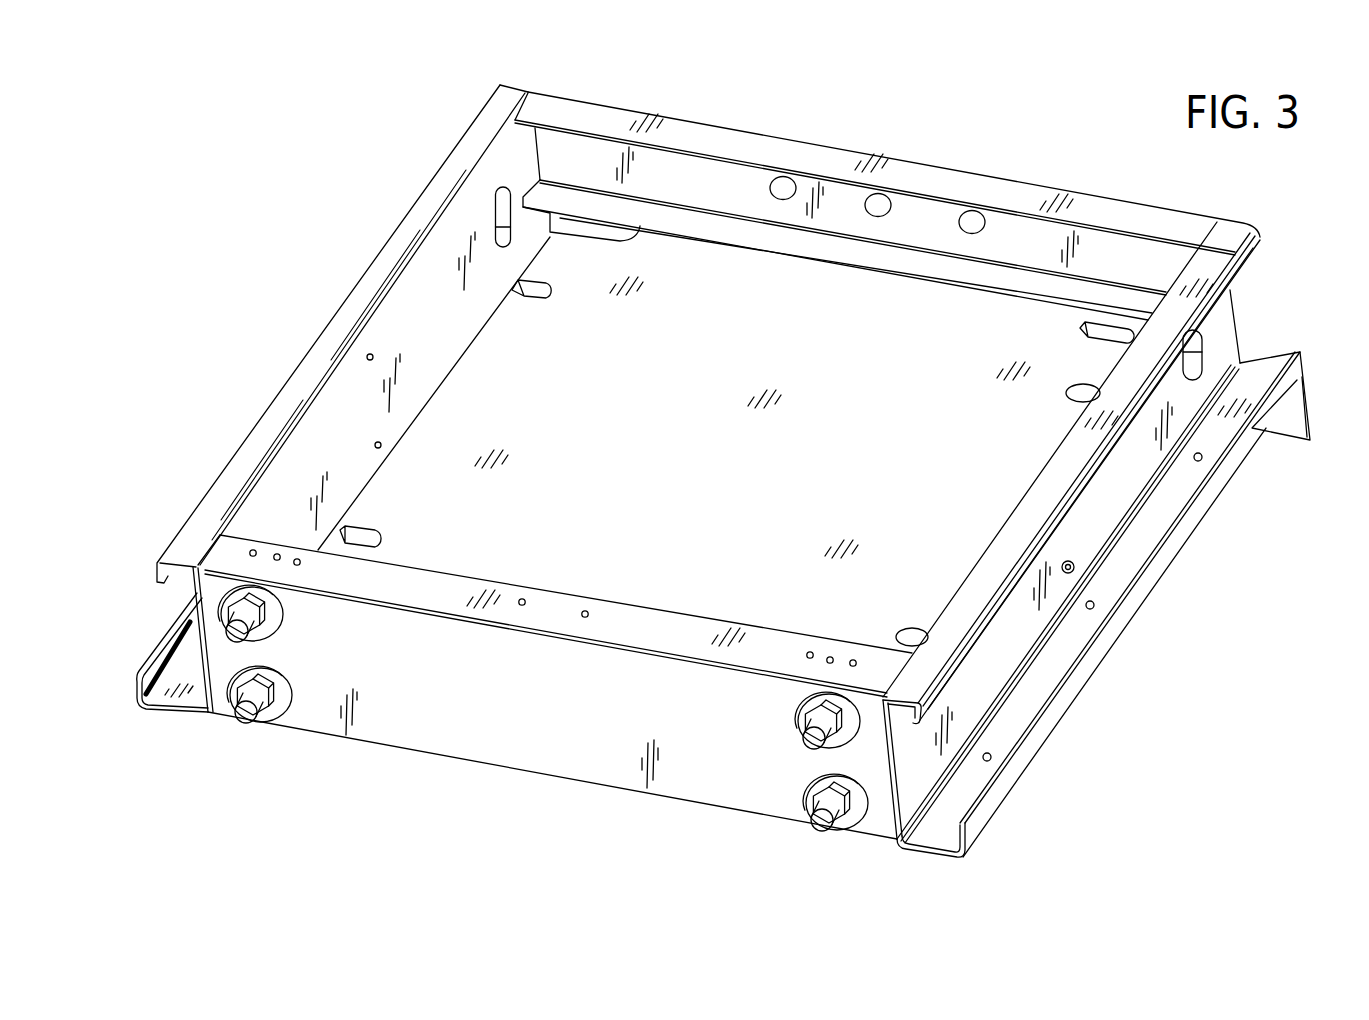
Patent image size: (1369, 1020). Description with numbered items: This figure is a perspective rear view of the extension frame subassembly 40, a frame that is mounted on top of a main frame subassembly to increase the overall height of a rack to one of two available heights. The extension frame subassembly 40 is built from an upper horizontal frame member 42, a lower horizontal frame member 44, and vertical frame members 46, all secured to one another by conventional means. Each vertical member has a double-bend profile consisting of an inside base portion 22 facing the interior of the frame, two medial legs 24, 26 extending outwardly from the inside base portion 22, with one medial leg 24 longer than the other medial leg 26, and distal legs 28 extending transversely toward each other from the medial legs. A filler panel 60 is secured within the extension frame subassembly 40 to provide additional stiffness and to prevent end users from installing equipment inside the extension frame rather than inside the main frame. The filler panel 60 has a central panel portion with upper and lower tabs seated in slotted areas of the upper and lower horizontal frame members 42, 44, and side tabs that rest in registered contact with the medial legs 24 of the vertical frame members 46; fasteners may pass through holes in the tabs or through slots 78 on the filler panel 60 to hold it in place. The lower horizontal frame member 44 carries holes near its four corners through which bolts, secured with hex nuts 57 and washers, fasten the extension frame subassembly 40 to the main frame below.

The extension frame subassembly 40 is at (250, 205).
The upper horizontal frame member 42 is at (770, 148).
The vertical frame member 46 is at (1228, 336).
The medial leg 26 is at (267, 430).
The slot 78 is at (543, 305).
The distal leg 28 is at (158, 568).
The filler panel 60 is at (768, 480).
The lower horizontal frame member 44 is at (518, 686).
The medial leg 24 is at (1142, 533).
The inside base portion 22 is at (995, 645).
The hex nut 57 is at (800, 814).